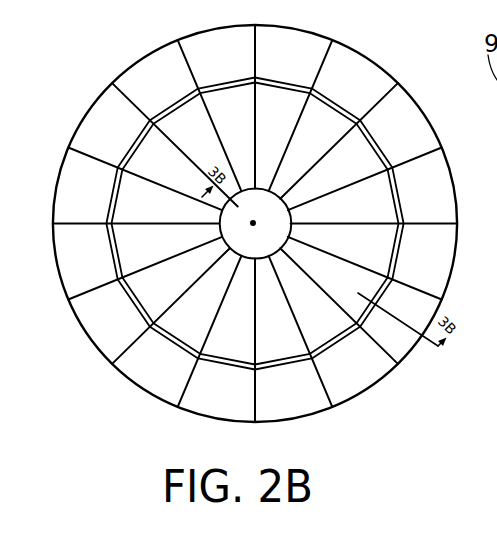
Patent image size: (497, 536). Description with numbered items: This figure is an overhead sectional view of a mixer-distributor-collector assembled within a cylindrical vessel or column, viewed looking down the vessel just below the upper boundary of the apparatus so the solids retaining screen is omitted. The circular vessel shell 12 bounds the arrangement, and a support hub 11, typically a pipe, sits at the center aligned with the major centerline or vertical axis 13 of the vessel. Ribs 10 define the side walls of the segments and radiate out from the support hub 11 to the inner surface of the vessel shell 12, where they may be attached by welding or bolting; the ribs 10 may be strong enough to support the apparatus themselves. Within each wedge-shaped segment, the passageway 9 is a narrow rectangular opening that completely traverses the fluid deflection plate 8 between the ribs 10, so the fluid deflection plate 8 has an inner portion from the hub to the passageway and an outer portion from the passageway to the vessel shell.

The fluid deflection plate 8 is at (228, 112).
The passageway 9 is at (345, 107).
The ribs 10 is at (163, 262).
The support hub 11 is at (267, 258).
The vessel shell 12 is at (83, 112).
The vertical axis 13 is at (267, 217).